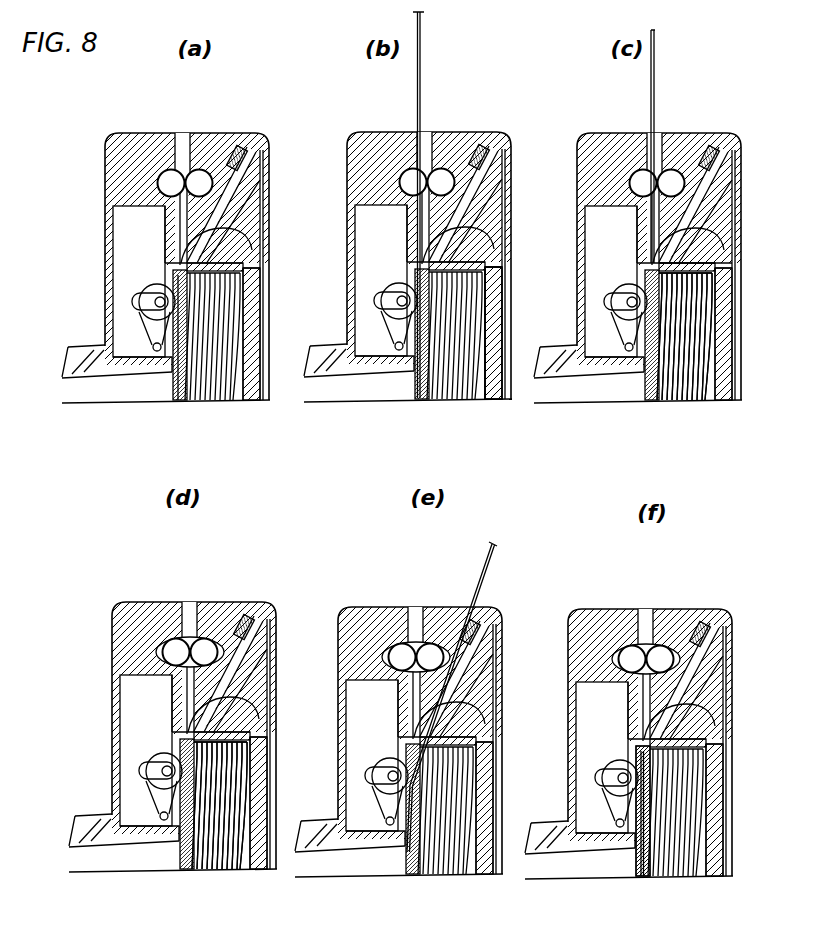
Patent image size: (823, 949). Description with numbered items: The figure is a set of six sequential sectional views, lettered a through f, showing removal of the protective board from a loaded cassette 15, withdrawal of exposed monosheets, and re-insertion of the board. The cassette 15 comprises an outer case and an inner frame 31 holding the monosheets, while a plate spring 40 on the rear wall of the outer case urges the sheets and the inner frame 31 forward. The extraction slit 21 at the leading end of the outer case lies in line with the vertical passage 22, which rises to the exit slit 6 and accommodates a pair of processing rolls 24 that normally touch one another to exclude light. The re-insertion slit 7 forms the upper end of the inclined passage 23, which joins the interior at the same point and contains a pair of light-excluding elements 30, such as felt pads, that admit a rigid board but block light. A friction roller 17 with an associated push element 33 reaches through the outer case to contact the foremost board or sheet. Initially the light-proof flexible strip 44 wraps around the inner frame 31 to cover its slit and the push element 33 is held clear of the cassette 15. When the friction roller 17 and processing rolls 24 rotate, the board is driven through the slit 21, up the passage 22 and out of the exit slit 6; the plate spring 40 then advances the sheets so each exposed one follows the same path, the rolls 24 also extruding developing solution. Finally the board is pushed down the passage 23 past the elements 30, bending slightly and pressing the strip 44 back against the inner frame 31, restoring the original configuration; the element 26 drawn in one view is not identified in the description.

The exit slit 6 is at (185, 133).
The re-insertion slit 7 is at (240, 155).
The cassette 15 is at (217, 380).
The friction roller 17 is at (157, 295).
The extraction slit 21 is at (200, 240).
The vertical passage 22 is at (178, 147).
The inclined passage 23 is at (232, 183).
The processing rolls 24 is at (200, 183).
The guide member 26 is at (217, 831).
The light-excluding elements 30 is at (620, 836).
The inner frame 31 is at (180, 380).
The push element 33 is at (150, 320).
The plate spring 40 is at (499, 357).
The light-proof flexible strip 44 is at (225, 268).